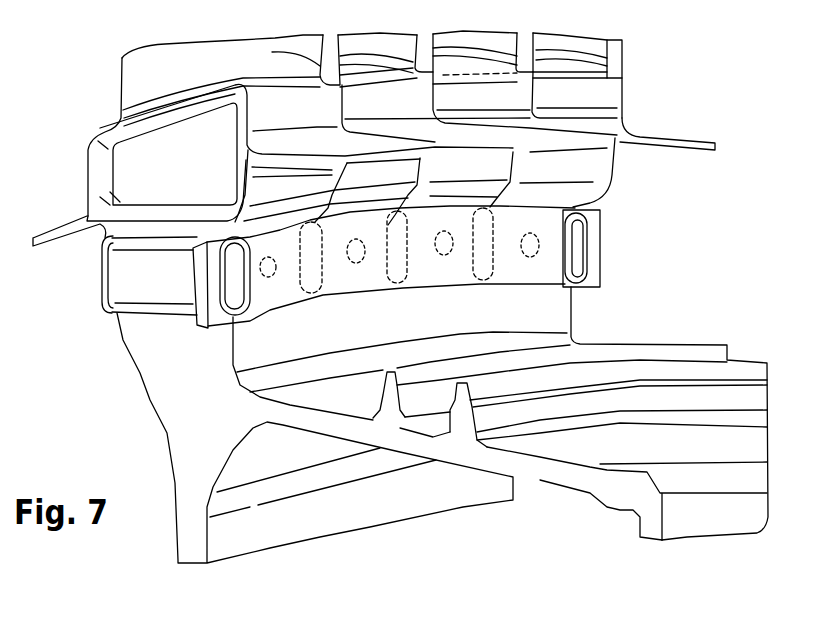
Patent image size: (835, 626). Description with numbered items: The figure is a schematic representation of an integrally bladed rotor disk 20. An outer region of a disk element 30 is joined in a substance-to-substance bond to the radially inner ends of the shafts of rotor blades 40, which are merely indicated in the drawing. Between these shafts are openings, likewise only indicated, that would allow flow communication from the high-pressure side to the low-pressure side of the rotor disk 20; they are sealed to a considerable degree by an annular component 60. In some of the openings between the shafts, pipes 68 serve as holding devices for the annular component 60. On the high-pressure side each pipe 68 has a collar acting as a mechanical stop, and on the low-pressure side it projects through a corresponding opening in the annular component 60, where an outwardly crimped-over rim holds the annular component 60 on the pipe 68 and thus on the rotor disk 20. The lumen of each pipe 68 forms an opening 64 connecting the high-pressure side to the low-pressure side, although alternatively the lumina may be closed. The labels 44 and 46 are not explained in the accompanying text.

The integrally bladed rotor disk 20 is at (697, 122).
The disk element 30 is at (203, 447).
The rotor blades 40 is at (612, 57).
The hollow rectangular cross section of outer ring 44 is at (143, 165).
The outer ring / casing 46 is at (162, 70).
The annular component 60 is at (553, 230).
The opening 64 is at (577, 250).
The pipes 68 is at (132, 275).